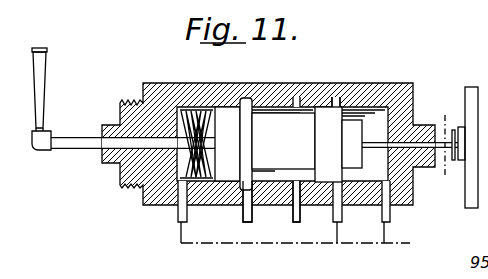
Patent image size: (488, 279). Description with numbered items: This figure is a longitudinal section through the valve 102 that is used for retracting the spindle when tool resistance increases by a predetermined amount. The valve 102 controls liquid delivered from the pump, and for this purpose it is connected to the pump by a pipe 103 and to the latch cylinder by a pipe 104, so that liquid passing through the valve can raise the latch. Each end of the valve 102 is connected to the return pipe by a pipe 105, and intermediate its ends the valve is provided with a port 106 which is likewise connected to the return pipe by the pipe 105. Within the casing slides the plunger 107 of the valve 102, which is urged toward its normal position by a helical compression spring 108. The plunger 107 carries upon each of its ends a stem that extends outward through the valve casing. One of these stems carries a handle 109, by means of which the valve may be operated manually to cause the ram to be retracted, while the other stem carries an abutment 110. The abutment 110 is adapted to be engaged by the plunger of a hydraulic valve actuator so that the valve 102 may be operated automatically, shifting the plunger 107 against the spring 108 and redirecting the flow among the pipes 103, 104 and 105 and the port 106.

The valve 102 is at (373, 95).
The pipe 103 is at (243, 213).
The pipe 104 is at (293, 208).
The pipe 105 is at (348, 243).
The port 106 is at (335, 100).
The plunger 107 is at (340, 144).
The helical compression spring 108 is at (198, 110).
The handle 109 is at (49, 70).
The abutment 110 is at (470, 100).